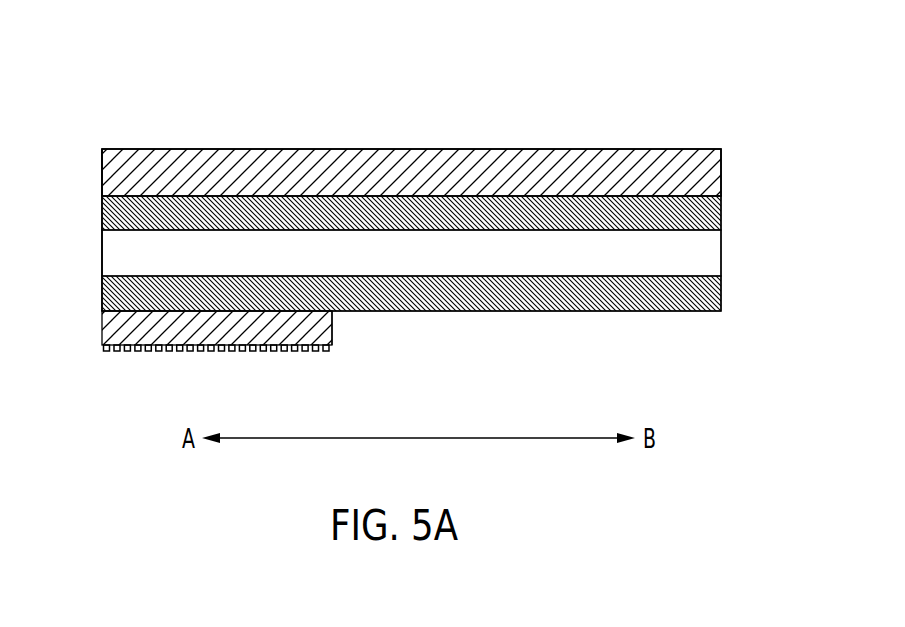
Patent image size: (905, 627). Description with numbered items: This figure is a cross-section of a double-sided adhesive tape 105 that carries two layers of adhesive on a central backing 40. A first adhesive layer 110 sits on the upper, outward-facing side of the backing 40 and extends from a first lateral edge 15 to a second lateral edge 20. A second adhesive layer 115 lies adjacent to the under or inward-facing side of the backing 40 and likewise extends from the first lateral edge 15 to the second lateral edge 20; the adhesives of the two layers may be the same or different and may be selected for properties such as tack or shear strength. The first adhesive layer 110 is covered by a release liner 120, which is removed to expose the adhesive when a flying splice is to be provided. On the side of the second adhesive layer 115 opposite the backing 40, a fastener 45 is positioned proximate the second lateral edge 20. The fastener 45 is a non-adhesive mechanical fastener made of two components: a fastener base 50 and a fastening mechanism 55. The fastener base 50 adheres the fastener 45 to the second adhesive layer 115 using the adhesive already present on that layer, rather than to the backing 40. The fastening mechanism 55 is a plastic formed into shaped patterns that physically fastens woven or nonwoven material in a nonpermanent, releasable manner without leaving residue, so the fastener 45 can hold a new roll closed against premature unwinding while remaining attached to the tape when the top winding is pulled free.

The adhesive tape 105 is at (156, 97).
The first lateral edge 15 is at (723, 165).
The release liner 120 is at (547, 163).
The second lateral edge 20 is at (102, 170).
The first adhesive layer 110 is at (712, 210).
The backing 40 is at (707, 254).
The second adhesive layer 115 is at (712, 292).
The fastener base 50 is at (102, 323).
The fastener 45 is at (350, 328).
The fastening mechanism 55 is at (277, 353).